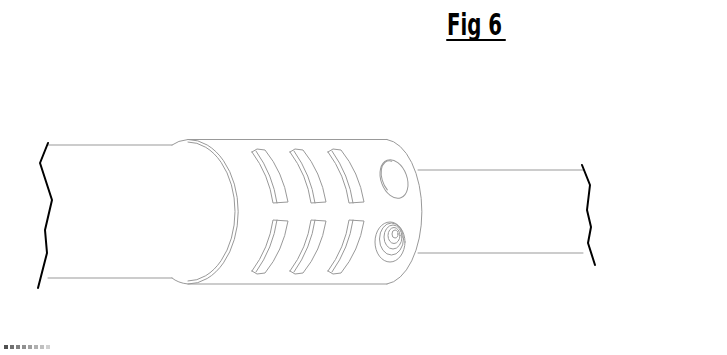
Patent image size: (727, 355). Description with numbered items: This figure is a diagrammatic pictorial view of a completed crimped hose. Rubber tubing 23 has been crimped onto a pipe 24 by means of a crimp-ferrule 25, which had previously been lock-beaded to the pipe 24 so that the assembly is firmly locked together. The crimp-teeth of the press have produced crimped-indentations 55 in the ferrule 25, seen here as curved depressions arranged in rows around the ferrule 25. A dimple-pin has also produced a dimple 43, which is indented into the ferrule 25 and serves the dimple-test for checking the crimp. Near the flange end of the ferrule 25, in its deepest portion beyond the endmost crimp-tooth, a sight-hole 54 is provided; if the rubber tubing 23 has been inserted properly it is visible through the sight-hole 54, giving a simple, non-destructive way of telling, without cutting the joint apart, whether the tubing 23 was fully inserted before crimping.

The rubber tubing 23 is at (148, 160).
The pipe 24 is at (519, 182).
The crimp-ferrule 25 is at (235, 152).
The dimple 43 is at (388, 243).
The sight-hole 54 is at (396, 173).
The crimped-indentations 55 is at (346, 168).